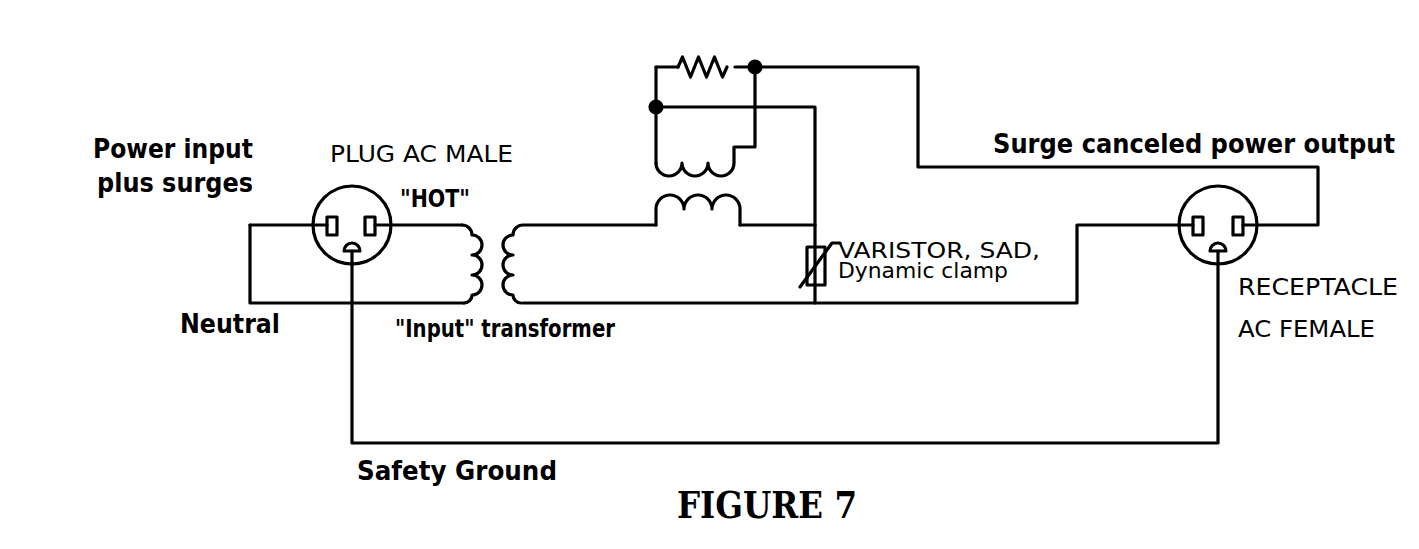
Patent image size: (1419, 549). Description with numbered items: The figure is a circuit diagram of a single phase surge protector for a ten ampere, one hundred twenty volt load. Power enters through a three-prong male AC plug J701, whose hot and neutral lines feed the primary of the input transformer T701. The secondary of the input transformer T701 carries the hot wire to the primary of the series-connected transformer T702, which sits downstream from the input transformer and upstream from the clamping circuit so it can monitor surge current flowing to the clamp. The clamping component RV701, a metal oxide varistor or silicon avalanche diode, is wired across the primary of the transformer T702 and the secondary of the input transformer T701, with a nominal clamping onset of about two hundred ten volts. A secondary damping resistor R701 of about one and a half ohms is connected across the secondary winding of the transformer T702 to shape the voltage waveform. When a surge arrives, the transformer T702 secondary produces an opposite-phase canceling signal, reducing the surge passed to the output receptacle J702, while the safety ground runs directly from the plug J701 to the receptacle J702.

The three-prong male AC plug J701 is at (279, 225).
The output receptacle J702 is at (1196, 243).
The input transformer T701 is at (559, 264).
The series-connected transformer or autotransformer T702 is at (705, 159).
The secondary damping resistor R701 is at (722, 46).
The metal oxide varistor or similar clamping component RV701 is at (772, 266).